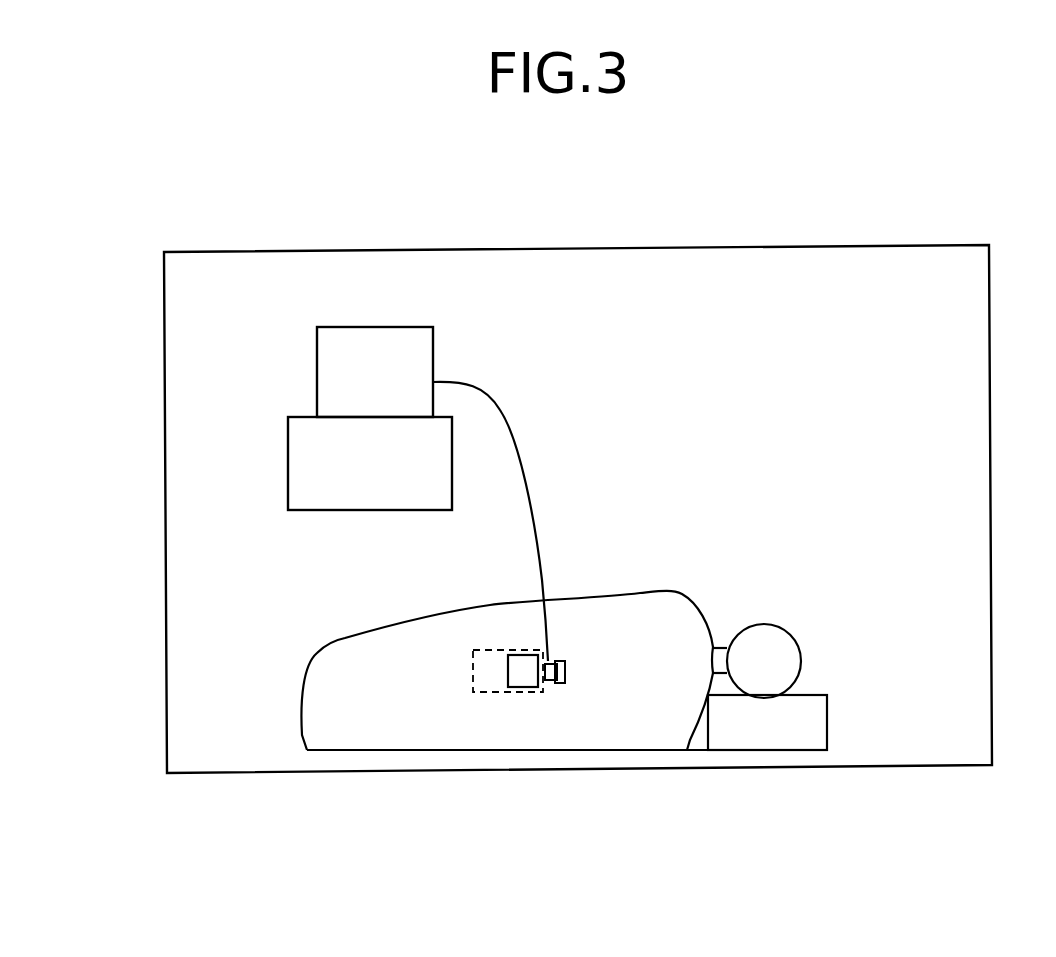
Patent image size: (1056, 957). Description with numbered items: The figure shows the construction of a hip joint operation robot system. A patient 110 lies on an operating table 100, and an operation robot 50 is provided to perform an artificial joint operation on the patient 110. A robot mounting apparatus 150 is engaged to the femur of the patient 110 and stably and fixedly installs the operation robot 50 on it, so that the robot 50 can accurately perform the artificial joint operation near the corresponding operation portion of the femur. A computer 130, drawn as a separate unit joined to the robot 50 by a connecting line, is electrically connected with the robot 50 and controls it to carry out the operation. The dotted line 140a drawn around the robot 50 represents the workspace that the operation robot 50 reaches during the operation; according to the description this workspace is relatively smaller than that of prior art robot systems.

The computer 130 is at (302, 445).
The patient 110 is at (648, 610).
The operating table 100 is at (775, 732).
The operation robot 50 is at (550, 683).
The dotted line (workspace) 140a is at (490, 685).
The robot mounting apparatus 150 is at (517, 667).